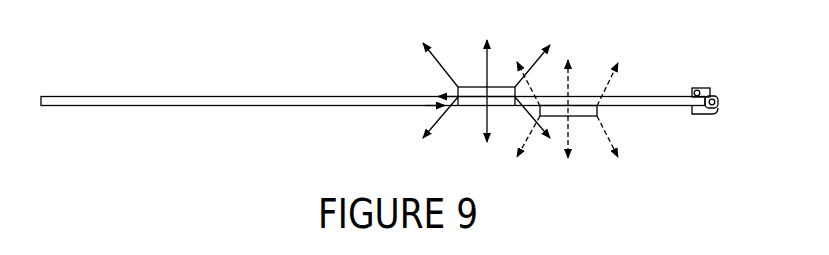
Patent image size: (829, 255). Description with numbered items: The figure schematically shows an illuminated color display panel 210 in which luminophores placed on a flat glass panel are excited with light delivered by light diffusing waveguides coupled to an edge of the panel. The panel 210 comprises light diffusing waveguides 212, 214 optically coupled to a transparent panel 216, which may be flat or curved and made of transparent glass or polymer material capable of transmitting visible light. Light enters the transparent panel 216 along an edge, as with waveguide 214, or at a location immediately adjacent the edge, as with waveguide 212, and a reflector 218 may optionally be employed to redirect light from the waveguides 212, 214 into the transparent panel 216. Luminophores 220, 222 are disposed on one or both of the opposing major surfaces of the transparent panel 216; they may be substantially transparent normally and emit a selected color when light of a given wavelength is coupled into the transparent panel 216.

The illuminated color display panel 210 is at (129, 60).
The light diffusing waveguide 212 is at (697, 89).
The light diffusing waveguide 214 is at (711, 89).
The transparent panel 216 is at (219, 96).
The reflector 218 is at (718, 108).
The luminophore 220 is at (580, 117).
The luminophore 222 is at (474, 86).